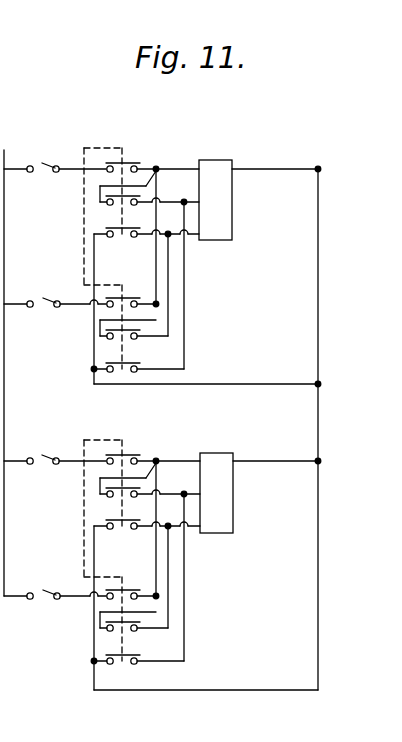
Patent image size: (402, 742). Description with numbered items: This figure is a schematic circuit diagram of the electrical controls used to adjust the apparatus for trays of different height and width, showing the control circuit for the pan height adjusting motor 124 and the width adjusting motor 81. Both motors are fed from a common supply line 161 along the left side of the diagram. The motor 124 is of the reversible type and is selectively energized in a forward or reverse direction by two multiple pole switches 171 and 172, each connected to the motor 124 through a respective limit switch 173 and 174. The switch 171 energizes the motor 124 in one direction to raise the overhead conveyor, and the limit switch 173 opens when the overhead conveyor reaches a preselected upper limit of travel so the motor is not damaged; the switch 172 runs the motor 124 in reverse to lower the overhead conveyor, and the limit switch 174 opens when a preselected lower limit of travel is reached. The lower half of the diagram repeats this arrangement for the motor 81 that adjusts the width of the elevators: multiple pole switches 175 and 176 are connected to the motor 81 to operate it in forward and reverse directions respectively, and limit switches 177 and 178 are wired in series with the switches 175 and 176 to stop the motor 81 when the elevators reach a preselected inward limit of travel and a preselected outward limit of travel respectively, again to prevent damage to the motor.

The supply line 161 is at (14, 308).
The limit switch 173 is at (62, 131).
The limit switch 174 is at (60, 268).
The multiple pole switch 171 is at (133, 159).
The multiple pole switch 172 is at (130, 295).
The pan height adjusting motor 124 is at (227, 187).
The limit switch 177 is at (62, 423).
The limit switch 178 is at (60, 560).
The multiple pole switch 175 is at (136, 451).
The multiple pole switch 176 is at (130, 592).
The width adjusting motor 81 is at (233, 510).